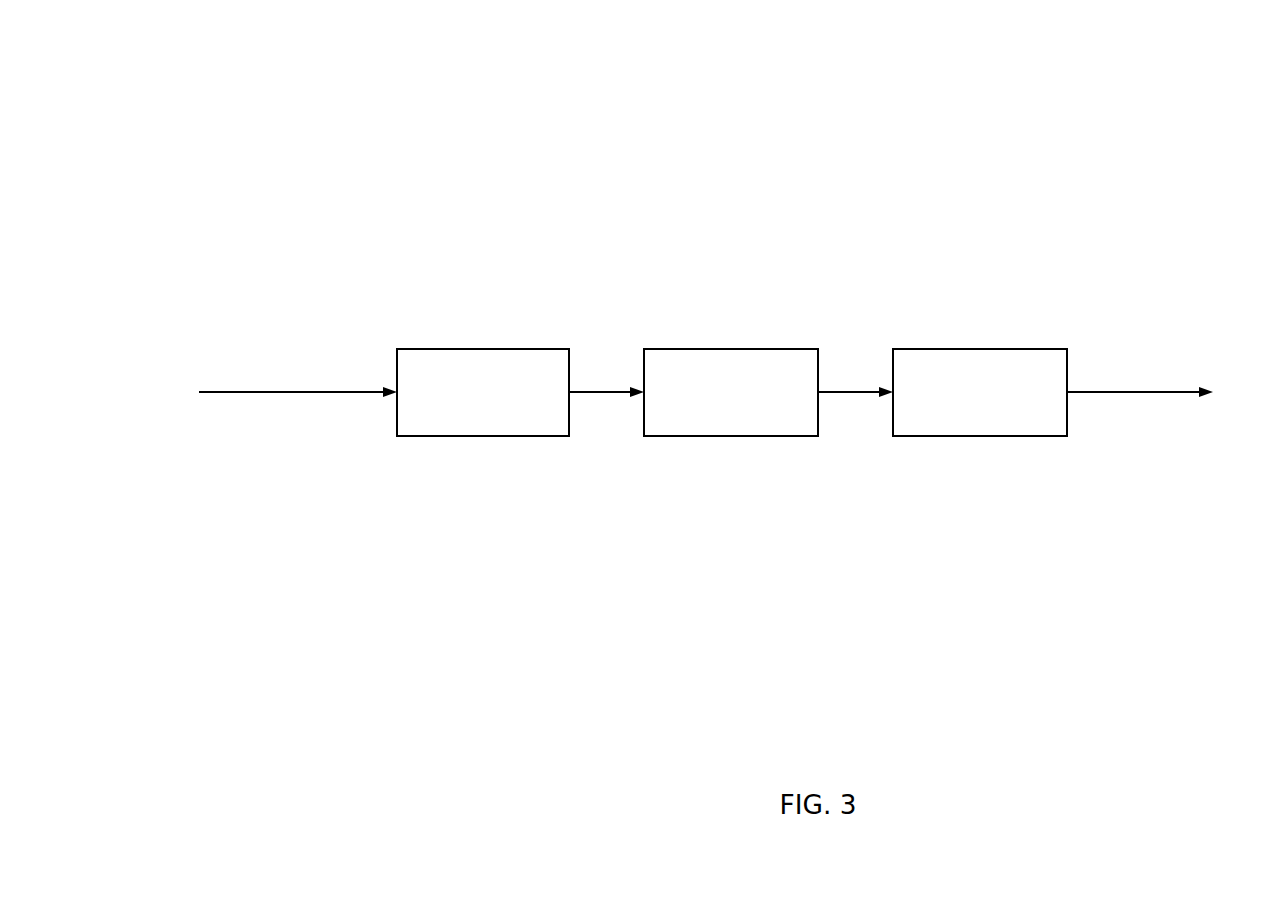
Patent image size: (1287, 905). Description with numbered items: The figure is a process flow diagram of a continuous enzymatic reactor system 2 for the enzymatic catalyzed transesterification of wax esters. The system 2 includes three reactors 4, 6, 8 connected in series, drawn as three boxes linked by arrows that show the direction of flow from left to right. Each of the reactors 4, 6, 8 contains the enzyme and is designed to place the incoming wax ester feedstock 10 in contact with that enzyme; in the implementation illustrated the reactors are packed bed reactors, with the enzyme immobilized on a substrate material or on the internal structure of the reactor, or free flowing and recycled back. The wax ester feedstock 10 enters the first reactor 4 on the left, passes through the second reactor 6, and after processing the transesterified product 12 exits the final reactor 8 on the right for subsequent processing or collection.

The continuous enzymatic reactor system 2 is at (337, 127).
The reactor 4 is at (428, 349).
The reactor 6 is at (724, 349).
The reactor 8 is at (967, 349).
The wax ester feedstock 10 is at (263, 392).
The transesterified product 12 is at (1138, 392).